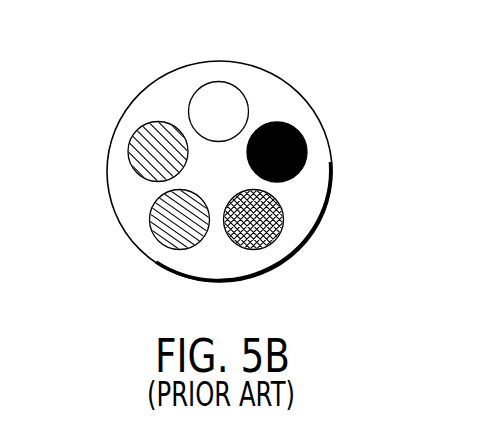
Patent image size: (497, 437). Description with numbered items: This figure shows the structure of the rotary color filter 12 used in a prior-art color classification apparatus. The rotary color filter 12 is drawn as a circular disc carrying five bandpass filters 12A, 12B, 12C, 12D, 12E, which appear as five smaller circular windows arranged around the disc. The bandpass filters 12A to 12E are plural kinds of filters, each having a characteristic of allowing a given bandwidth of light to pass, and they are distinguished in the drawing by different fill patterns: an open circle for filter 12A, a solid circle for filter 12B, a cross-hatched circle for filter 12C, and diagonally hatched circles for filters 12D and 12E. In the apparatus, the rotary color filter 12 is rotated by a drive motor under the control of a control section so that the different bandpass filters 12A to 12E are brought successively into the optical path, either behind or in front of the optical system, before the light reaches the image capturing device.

The rotary color filter 12 is at (184, 65).
The bandpass filter 12A is at (236, 87).
The bandpass filter 12B is at (303, 137).
The bandpass filter 12C is at (274, 242).
The bandpass filter 12D is at (156, 238).
The bandpass filter 12E is at (130, 141).